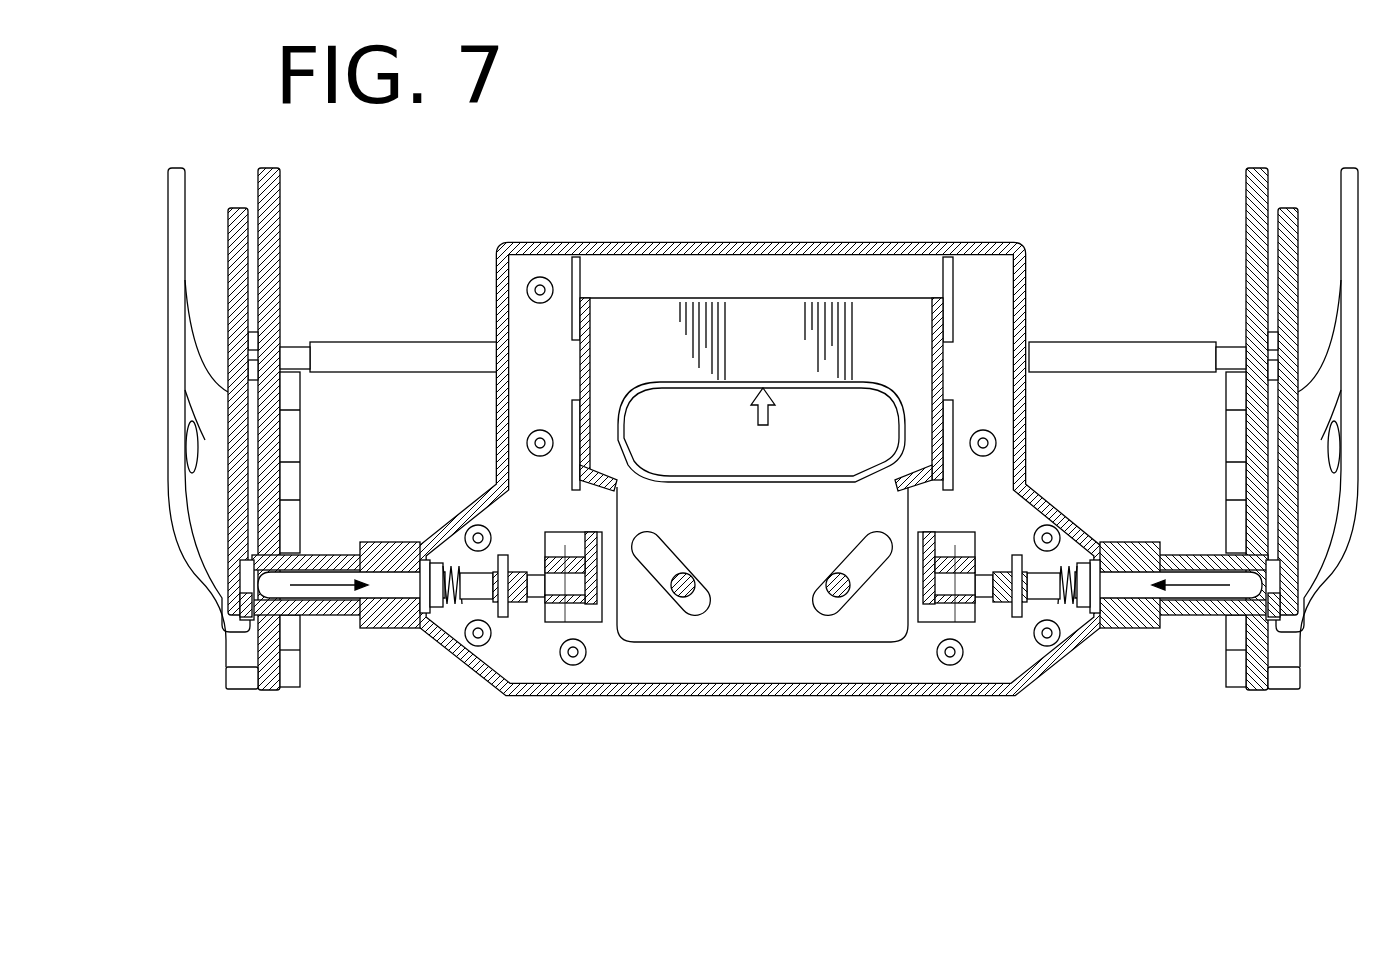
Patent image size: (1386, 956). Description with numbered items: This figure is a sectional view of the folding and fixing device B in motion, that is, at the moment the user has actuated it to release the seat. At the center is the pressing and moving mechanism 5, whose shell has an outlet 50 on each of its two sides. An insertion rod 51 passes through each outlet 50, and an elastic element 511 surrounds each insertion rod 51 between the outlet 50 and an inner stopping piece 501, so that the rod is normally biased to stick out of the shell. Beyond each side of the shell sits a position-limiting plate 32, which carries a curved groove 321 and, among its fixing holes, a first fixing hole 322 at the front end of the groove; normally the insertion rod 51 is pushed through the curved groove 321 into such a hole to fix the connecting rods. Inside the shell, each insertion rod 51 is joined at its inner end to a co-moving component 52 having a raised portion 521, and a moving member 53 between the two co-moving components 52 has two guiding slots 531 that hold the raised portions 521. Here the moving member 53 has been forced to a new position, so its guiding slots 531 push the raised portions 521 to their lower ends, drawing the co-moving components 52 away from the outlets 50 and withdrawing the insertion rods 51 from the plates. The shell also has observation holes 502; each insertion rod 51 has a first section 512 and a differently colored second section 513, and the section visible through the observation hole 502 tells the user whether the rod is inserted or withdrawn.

The pressing and moving mechanism 5 is at (776, 243).
The folding and fixing device B is at (925, 200).
The position-limiting plate 32 is at (228, 268).
The curved groove 321 is at (227, 600).
The first fixing hole 322 is at (233, 573).
The outlet 50 is at (343, 617).
The inner stopping piece 501 is at (452, 553).
The observation hole 502 is at (510, 572).
The insertion rod 51 is at (398, 590).
The elastic element 511 is at (428, 620).
The first section 512 is at (527, 617).
The second section 513 is at (492, 605).
The co-moving component 52 is at (592, 605).
The raised portion 521 is at (715, 578).
The moving member 53 is at (637, 360).
The guiding slot 531 is at (860, 567).